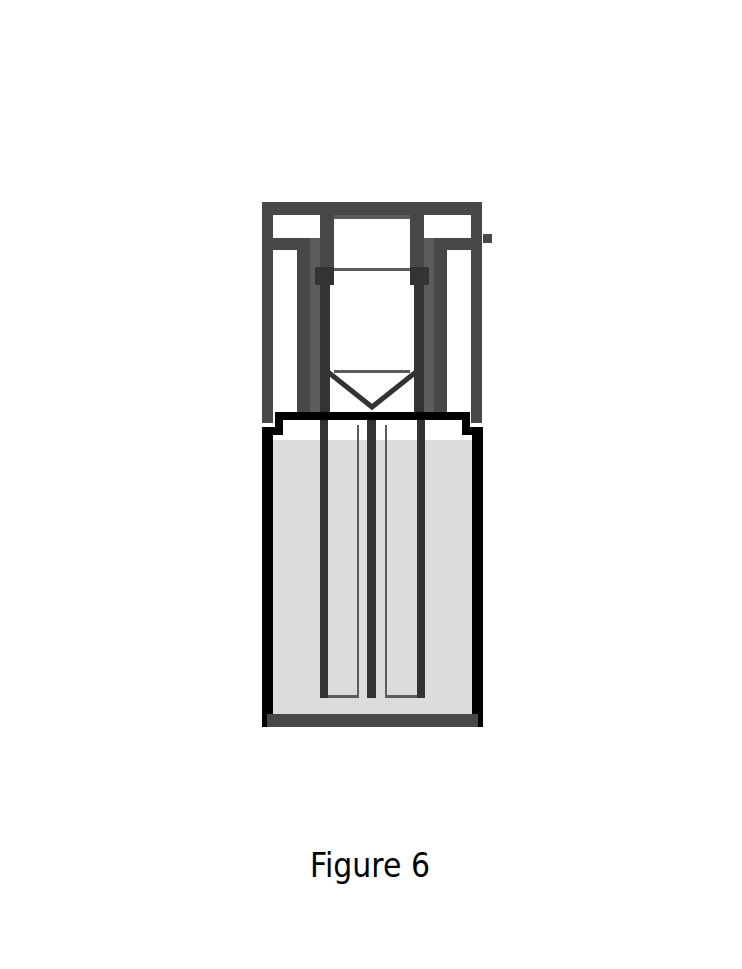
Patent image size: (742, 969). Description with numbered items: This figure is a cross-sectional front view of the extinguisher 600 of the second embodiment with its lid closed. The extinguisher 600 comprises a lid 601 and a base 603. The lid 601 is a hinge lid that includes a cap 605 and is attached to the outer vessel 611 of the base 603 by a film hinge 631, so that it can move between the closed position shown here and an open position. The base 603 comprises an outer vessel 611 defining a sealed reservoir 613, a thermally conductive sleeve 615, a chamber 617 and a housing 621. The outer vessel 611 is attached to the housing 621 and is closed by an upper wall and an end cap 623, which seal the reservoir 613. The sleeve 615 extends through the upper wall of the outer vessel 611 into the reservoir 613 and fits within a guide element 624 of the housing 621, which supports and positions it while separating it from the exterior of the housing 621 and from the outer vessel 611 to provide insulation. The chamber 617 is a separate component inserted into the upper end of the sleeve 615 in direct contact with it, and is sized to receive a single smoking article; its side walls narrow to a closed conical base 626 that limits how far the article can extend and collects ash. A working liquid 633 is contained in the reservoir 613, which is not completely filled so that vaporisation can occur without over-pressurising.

The extinguisher 600 is at (217, 143).
The lid 601 is at (455, 206).
The base 603 is at (483, 644).
The cap 605 is at (372, 212).
The outer vessel 611 is at (483, 543).
The sealed reservoir 613 is at (445, 489).
The thermally conductive sleeve 615 is at (320, 608).
The chamber 617 is at (398, 317).
The housing 621 is at (482, 334).
The end cap 623 is at (445, 718).
The guide element 624 is at (303, 303).
The conical base 626 is at (350, 391).
The film hinge 631 is at (492, 240).
The working liquid 633 is at (297, 533).